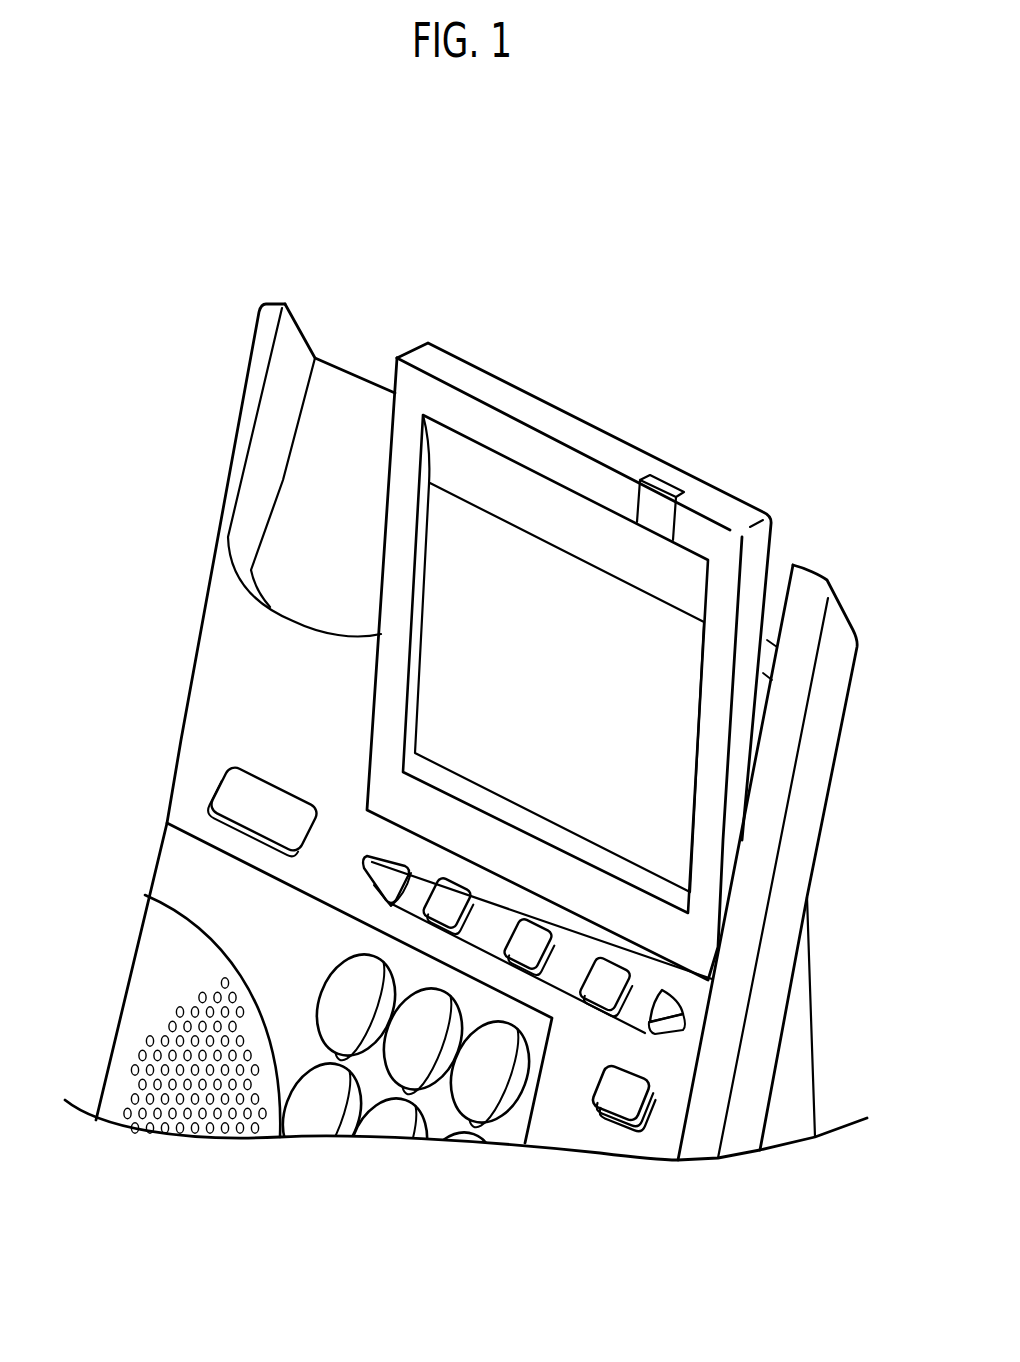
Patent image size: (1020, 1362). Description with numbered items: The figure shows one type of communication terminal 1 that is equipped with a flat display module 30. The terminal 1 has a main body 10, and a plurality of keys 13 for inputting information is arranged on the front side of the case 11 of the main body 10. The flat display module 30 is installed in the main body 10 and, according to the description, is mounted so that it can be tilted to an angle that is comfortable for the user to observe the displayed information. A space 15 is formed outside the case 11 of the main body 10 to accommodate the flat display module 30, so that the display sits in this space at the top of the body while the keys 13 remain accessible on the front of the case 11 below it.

The terminal 1 is at (887, 357).
The main body 10 is at (690, 1064).
The case 11 is at (680, 1090).
The keys 13 is at (340, 1010).
The space 15 is at (772, 623).
The flat display module 30 is at (541, 396).